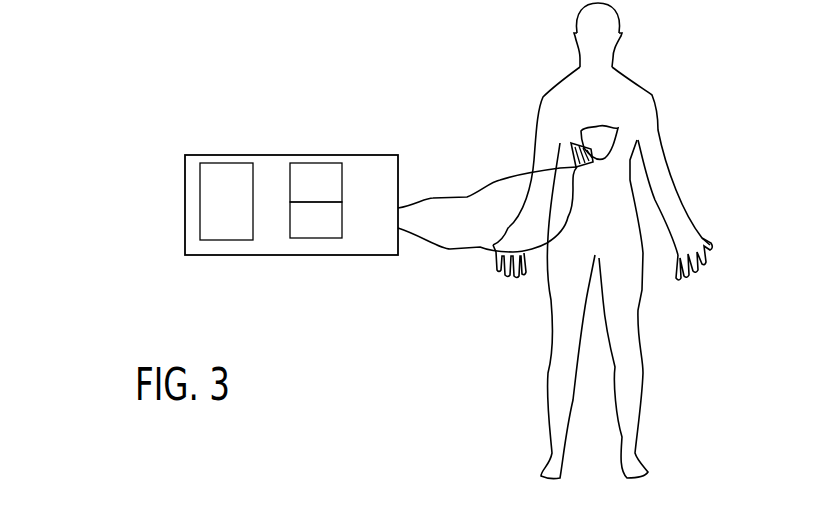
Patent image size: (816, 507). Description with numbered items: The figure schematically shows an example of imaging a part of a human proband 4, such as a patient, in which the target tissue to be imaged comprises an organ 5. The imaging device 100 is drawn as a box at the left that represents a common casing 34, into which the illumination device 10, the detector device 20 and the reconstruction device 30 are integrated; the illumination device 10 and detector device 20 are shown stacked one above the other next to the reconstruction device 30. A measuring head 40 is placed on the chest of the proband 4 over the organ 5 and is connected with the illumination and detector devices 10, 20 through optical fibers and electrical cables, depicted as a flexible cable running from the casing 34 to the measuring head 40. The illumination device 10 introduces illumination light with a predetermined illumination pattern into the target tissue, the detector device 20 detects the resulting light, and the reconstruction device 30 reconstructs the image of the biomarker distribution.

The imaging device 100 is at (158, 122).
The common casing 34 is at (365, 163).
The reconstruction device 30 is at (226, 201).
The illumination device 10 is at (316, 182).
The detector device 20 is at (316, 220).
The measuring head 40 is at (556, 140).
The human proband 4 is at (604, 101).
The organ 5 is at (607, 150).